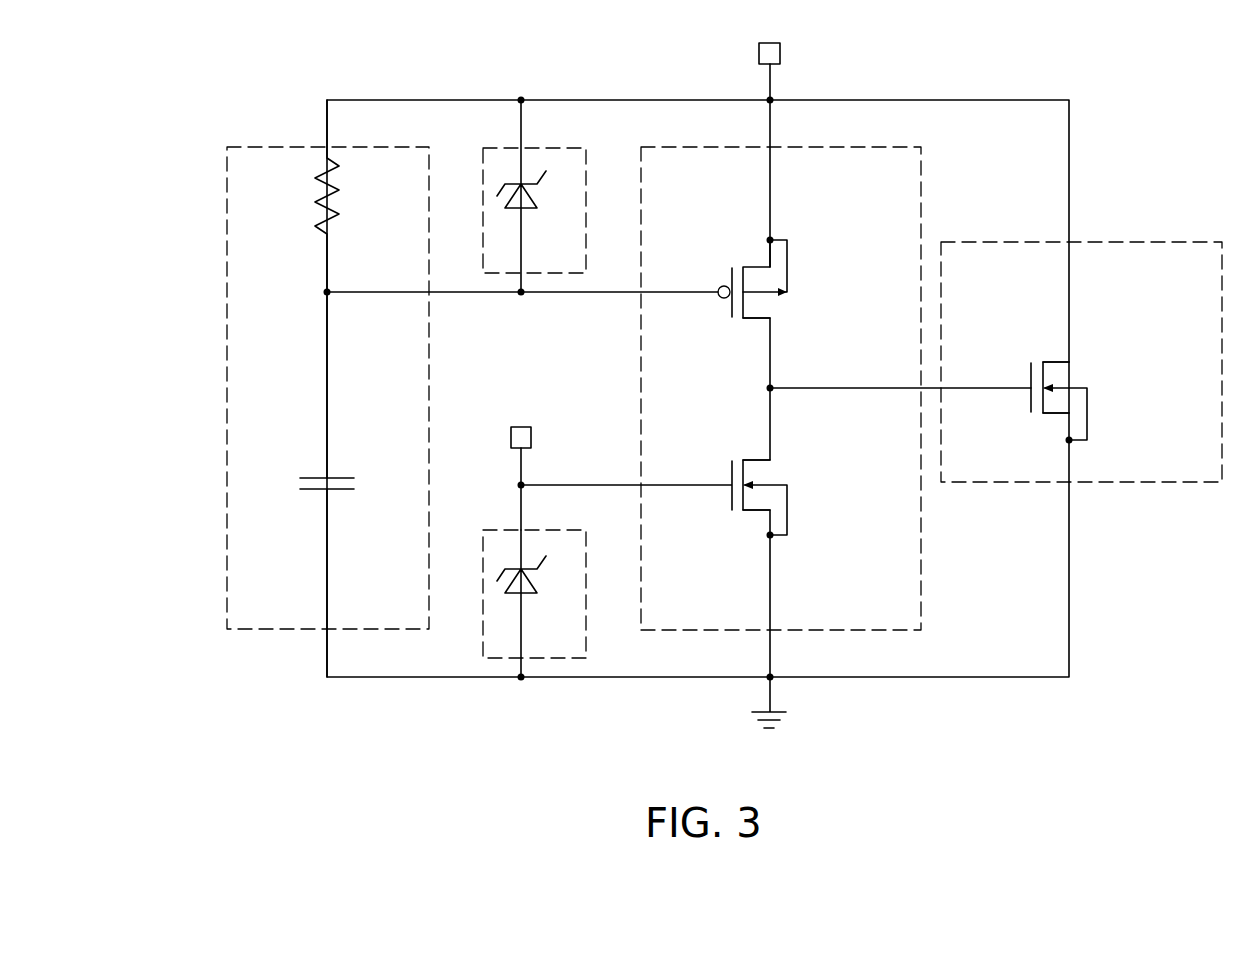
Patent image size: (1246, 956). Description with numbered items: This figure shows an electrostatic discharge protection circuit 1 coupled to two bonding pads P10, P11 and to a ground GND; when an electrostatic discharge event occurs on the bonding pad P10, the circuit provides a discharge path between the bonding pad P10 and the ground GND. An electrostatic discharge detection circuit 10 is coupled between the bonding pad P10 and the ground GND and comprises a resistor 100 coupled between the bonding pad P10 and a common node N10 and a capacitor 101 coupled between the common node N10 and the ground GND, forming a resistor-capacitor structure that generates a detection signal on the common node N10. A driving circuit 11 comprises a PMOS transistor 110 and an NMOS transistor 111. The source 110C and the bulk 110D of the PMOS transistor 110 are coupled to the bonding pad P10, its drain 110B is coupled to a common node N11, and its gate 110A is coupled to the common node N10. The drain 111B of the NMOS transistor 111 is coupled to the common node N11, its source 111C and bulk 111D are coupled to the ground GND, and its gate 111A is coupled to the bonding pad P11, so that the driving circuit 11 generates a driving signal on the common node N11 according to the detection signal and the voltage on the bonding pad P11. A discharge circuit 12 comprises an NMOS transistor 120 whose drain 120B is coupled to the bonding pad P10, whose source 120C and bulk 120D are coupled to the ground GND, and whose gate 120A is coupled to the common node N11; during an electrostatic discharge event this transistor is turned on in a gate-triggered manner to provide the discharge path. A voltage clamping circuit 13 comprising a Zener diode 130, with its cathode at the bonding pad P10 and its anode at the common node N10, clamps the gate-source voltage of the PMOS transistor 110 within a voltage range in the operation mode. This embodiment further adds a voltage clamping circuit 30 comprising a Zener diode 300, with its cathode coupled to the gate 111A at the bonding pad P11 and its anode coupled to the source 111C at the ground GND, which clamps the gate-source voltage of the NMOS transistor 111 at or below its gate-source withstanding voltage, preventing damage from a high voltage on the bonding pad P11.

The electrostatic discharge protection circuit 1 is at (132, 59).
The electrostatic discharge detection circuit 10 is at (228, 147).
The resistor 100 is at (340, 193).
The capacitor 101 is at (340, 478).
The driving circuit 11 is at (641, 148).
The PMOS transistor 110 is at (801, 226).
The gate of PMOS transistor 110A is at (713, 297).
The drain of PMOS transistor 110B is at (767, 330).
The source of PMOS transistor 110C is at (766, 257).
The bulk of PMOS transistor 110D is at (781, 300).
The NMOS transistor 111 is at (802, 552).
The gate of NMOS transistor 111A is at (713, 487).
The drain of NMOS transistor 111B is at (768, 448).
The source of NMOS transistor 111C is at (767, 522).
The bulk of NMOS transistor 111D is at (776, 484).
The discharge circuit 12 is at (942, 242).
The NMOS transistor 120 is at (1102, 318).
The gate of NMOS transistor 120A is at (1012, 390).
The drain of NMOS transistor 120B is at (1066, 352).
The source of NMOS transistor 120C is at (1066, 428).
The bulk of NMOS transistor 120D is at (1076, 388).
The voltage clamping circuit 13 is at (556, 148).
The Zener diode 130 is at (530, 210).
The voltage clamping circuit 30 is at (556, 530).
The Zener diode 300 is at (530, 596).
The bonding pad P10 is at (783, 54).
The bonding pad P11 is at (520, 426).
The common node N10 is at (323, 293).
The common node N11 is at (776, 388).
The ground GND is at (768, 722).